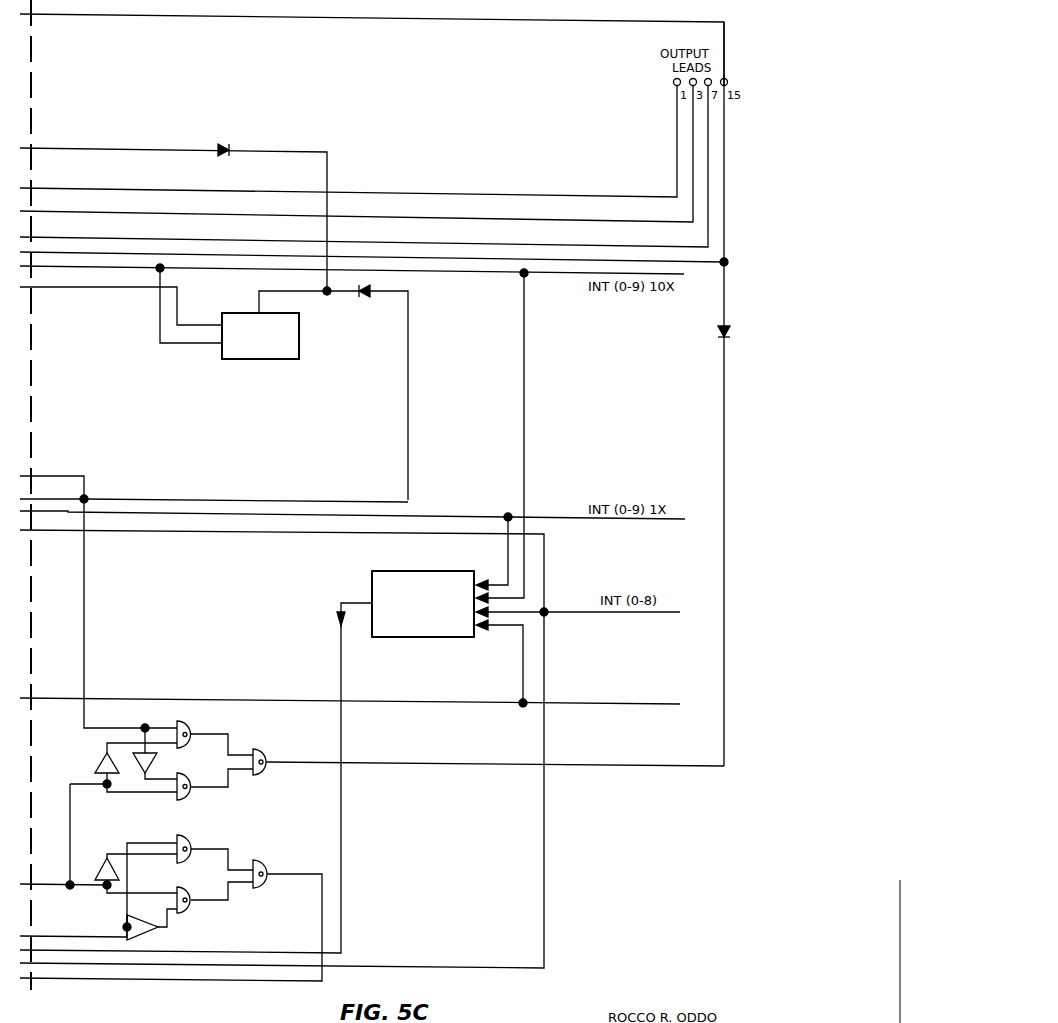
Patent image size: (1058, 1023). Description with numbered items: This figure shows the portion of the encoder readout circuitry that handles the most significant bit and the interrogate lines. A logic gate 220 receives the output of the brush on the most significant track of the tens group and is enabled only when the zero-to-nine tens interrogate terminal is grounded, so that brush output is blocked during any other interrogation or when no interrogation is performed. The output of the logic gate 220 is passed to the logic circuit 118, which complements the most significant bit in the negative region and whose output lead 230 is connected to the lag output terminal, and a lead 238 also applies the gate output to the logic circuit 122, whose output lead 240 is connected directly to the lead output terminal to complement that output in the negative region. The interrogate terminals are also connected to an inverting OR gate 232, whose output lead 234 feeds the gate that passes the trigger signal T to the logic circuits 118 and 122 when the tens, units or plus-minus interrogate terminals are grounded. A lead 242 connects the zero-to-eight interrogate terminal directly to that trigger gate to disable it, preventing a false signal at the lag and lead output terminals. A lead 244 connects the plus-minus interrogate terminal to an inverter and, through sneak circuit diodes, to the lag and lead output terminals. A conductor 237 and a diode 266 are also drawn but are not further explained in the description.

The logic circuit 118 is at (241, 855).
The logic circuit 122 is at (246, 735).
The logic gate 220 is at (254, 359).
The output lead 230 is at (305, 878).
The inverting OR gate 232 is at (413, 571).
The output lead 234 is at (341, 658).
The conductor 237 is at (408, 344).
The lead 238 is at (190, 344).
The output lead 240 is at (292, 763).
The lead 242 is at (545, 648).
The lead 244 is at (398, 703).
The diode 266 is at (333, 291).